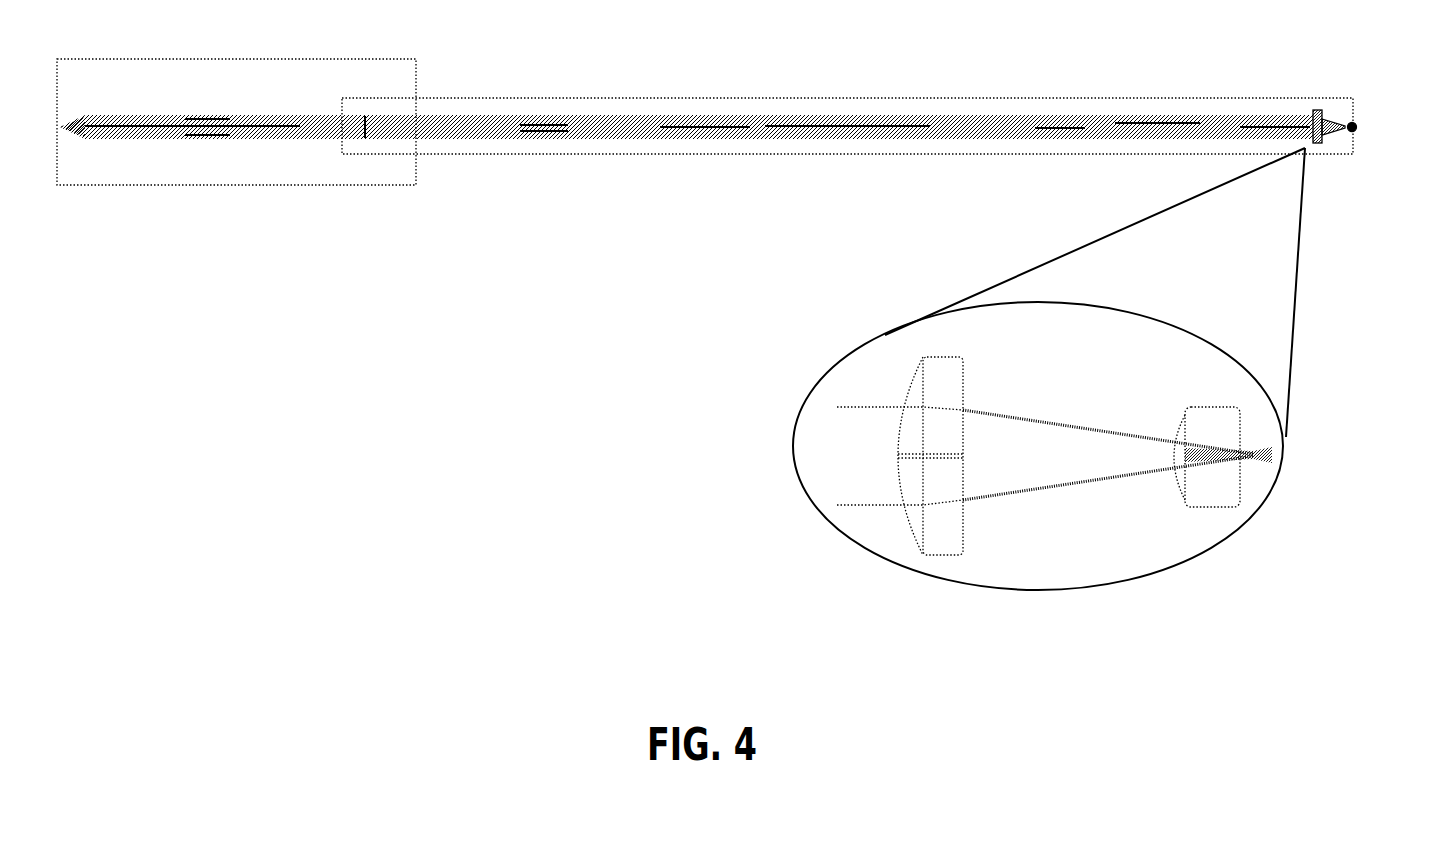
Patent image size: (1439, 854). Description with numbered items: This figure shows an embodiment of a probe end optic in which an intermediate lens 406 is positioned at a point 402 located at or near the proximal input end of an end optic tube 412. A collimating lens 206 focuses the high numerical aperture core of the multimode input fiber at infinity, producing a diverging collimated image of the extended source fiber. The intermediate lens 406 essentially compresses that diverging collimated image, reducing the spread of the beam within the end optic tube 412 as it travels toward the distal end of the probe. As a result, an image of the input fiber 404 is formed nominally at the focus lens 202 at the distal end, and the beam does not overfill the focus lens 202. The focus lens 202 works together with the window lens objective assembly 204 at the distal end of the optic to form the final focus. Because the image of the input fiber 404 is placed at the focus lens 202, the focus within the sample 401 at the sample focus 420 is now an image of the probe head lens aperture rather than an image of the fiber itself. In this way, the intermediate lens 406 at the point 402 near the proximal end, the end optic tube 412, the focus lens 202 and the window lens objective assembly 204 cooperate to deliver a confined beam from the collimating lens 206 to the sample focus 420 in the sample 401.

The focus lens 202 is at (962, 357).
The window lens objective assembly 204 is at (1357, 132).
The collimating lens 206 is at (94, 158).
The sample 401 is at (1427, 147).
The point 402 is at (365, 160).
The image of the input fiber 404 is at (883, 388).
The intermediate lens 406 is at (365, 117).
The end optic tube 412 is at (954, 97).
The sample focus 420 is at (1253, 474).